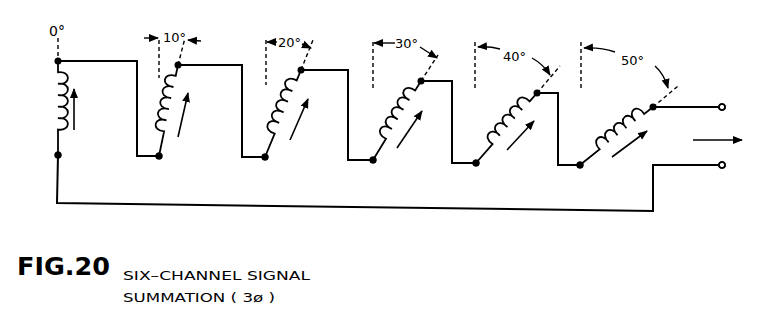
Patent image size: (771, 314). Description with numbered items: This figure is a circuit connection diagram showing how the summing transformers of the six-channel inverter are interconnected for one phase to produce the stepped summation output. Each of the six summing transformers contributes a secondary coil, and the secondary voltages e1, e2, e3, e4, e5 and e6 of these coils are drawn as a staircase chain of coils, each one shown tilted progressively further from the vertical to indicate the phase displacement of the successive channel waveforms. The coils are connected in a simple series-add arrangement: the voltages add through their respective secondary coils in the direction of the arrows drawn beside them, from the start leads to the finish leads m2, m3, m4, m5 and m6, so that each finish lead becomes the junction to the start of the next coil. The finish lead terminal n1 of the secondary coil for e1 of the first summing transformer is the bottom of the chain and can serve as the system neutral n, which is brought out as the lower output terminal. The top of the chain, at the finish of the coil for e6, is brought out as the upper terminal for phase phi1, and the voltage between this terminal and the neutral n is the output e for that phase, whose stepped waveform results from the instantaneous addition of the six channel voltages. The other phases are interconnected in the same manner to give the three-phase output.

The secondary voltage of first summing transformer e1 is at (55, 108).
The secondary voltage of second summing transformer e2 is at (168, 110).
The secondary voltage of third summing transformer e3 is at (286, 113).
The secondary voltage of fourth summing transformer e4 is at (397, 120).
The secondary voltage of fifth summing transformer e5 is at (506, 128).
The secondary voltage of sixth summing transformer e6 is at (616, 135).
The finish lead terminal n1 is at (48, 158).
The finish lead m2 is at (173, 161).
The finish lead m3 is at (280, 163).
The finish lead m4 is at (388, 166).
The finish lead m5 is at (491, 169).
The finish lead m6 is at (595, 171).
The phase phi1 is at (735, 109).
The system neutral n is at (731, 166).
The output e is at (726, 140).